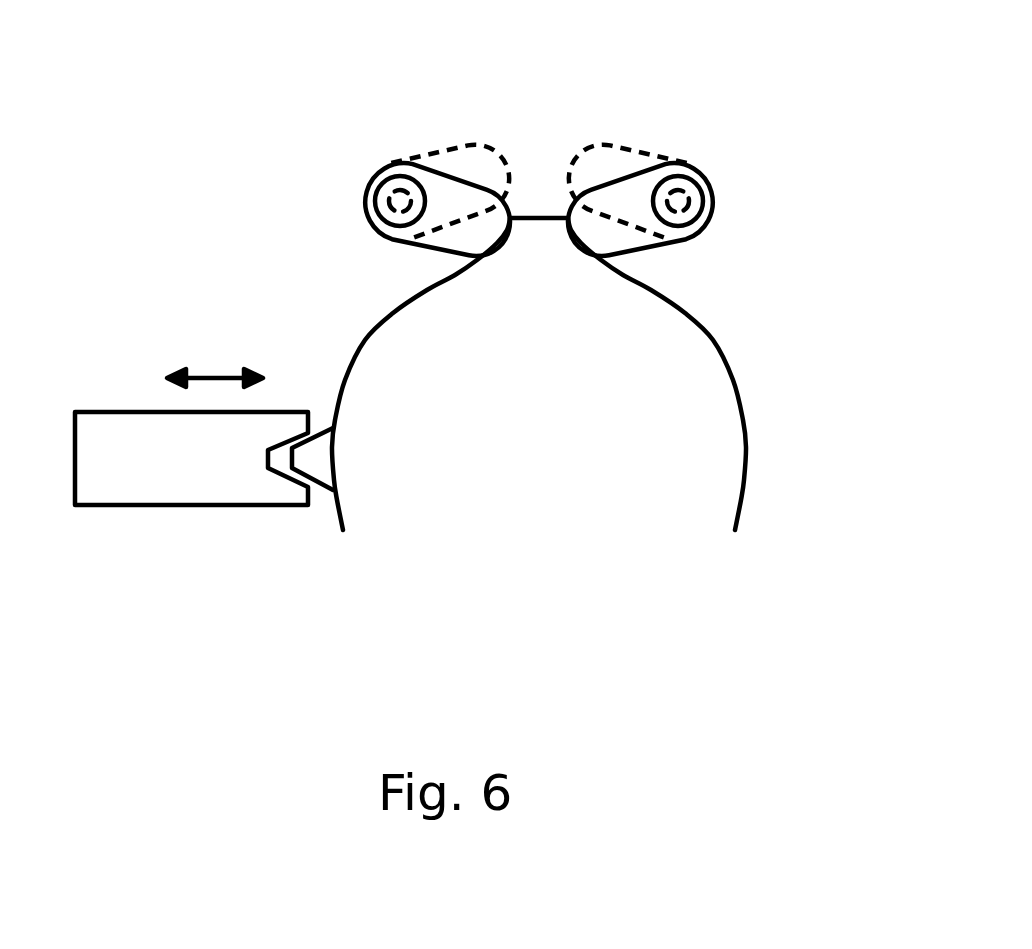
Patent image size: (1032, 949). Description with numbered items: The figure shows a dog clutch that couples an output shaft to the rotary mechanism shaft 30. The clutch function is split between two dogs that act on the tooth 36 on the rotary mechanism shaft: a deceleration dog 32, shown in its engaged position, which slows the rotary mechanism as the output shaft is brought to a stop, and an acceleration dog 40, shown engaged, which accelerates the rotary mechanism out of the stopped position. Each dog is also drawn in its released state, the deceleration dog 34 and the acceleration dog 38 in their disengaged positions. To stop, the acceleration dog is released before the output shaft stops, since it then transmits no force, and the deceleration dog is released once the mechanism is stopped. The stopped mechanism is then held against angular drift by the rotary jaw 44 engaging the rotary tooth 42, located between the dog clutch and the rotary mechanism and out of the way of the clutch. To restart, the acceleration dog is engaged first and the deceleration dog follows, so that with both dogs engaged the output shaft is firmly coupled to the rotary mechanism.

The rotary mechanism shaft 30 is at (744, 426).
The deceleration dog (engaged position) 32 is at (437, 245).
The deceleration dog (disengaged position) 34 is at (445, 147).
The tooth on rotary mechanism shaft 36 is at (538, 218).
The acceleration dog (disengaged position) 38 is at (610, 147).
The acceleration dog (engaged position) 40 is at (637, 245).
The rotary tooth 42 is at (320, 490).
The rotary jaw 44 is at (138, 505).